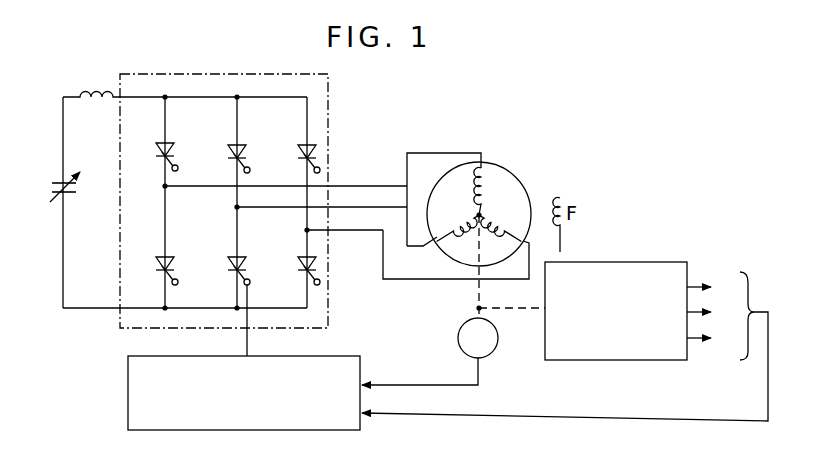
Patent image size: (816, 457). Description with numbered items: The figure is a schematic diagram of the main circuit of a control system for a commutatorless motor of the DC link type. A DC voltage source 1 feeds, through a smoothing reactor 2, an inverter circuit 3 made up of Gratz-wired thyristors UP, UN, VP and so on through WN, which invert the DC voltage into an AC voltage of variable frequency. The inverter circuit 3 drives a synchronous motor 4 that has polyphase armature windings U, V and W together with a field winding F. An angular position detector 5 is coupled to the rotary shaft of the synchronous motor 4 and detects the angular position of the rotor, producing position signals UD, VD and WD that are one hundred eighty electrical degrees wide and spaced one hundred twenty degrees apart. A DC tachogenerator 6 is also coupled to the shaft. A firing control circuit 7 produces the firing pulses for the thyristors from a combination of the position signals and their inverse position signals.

The DC voltage source 1 is at (52, 176).
The smoothing reactor 2 is at (88, 87).
The inverter circuit 3 is at (330, 137).
The synchronous motor 4 is at (541, 150).
The angular position detector 5 is at (633, 262).
The DC tachogenerator 6 is at (493, 347).
The firing control circuit 7 is at (128, 390).